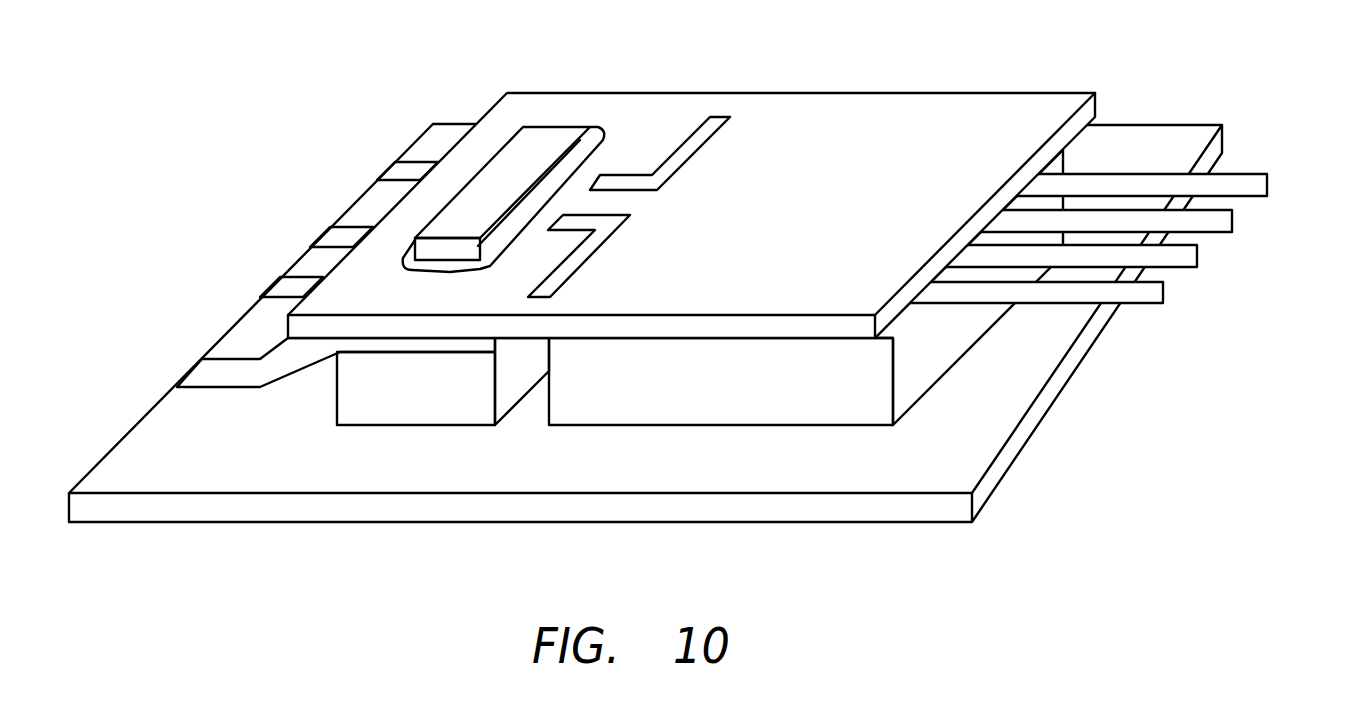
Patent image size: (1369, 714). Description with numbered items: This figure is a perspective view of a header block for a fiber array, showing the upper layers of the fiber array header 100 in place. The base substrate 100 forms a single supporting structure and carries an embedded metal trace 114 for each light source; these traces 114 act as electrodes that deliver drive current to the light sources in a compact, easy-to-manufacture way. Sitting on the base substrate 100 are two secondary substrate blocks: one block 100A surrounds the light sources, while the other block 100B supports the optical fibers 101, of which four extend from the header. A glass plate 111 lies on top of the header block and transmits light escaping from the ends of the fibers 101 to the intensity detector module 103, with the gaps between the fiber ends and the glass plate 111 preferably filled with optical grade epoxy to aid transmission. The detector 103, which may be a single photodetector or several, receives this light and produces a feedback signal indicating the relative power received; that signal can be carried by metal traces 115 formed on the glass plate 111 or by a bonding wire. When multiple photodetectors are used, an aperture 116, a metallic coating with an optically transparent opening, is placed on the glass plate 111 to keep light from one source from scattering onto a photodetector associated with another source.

The substrate 100 is at (937, 479).
The secondary substrate block 100A is at (400, 415).
The secondary substrate block 100B is at (780, 373).
The optical fibers 101 is at (1152, 293).
The intensity detector module 103 is at (545, 128).
The glass plate 111 is at (843, 301).
The metal trace 114 is at (400, 167).
The metal traces 115 is at (727, 112).
The aperture 116 is at (597, 130).